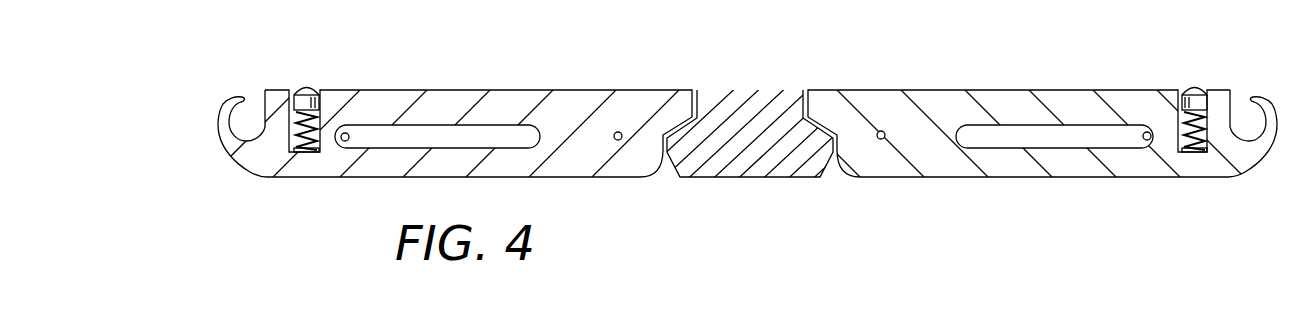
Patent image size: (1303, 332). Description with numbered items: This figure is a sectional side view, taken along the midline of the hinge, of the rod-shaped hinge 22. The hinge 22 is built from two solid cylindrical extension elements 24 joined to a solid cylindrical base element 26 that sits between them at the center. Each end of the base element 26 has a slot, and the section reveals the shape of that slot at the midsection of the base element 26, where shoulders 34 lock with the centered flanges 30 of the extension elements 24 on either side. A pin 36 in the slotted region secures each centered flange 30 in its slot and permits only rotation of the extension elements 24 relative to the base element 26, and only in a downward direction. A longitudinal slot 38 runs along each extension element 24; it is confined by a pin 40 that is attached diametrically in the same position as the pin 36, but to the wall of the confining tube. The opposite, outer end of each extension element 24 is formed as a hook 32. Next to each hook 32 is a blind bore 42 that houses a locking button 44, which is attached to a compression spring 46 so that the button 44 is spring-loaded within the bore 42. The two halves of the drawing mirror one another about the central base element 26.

The rod-shaped hinge 22 is at (727, 45).
The extension element 24 is at (452, 90).
The base element 26 is at (762, 90).
The centered flange 30 is at (675, 110).
The hook 32 is at (243, 98).
The shoulder 34 is at (675, 132).
The pin 36 is at (614, 133).
The longitudinal slot 38 is at (498, 138).
The pin 40 is at (345, 141).
The blind bore 42 is at (278, 146).
The locking button 44 is at (301, 102).
The compression spring 46 is at (311, 132).